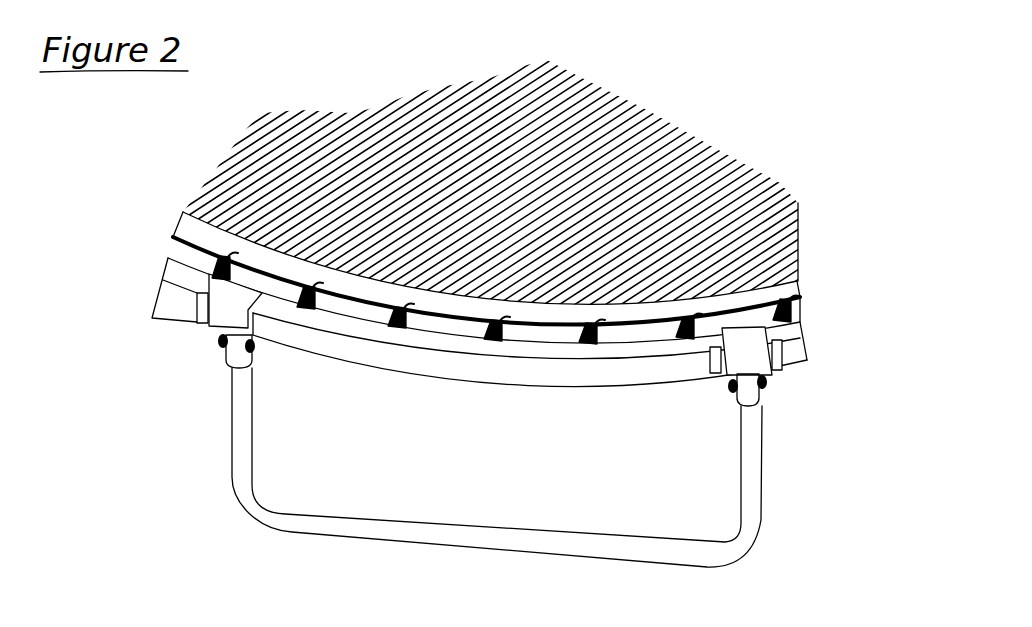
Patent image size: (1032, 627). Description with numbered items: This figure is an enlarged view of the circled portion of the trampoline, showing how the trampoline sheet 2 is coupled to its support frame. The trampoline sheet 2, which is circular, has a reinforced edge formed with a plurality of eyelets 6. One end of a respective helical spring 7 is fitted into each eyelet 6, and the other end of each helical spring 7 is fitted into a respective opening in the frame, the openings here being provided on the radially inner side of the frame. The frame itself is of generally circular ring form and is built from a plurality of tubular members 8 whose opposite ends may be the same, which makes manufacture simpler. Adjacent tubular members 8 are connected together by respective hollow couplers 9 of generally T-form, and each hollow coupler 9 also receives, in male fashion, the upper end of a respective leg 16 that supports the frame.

The trampoline sheet 2 is at (720, 170).
The eyelets 6 is at (250, 254).
The helical spring 7 is at (795, 307).
The tubular members 8 is at (175, 297).
The hollow coupler 9 is at (225, 310).
The leg 16 is at (242, 428).